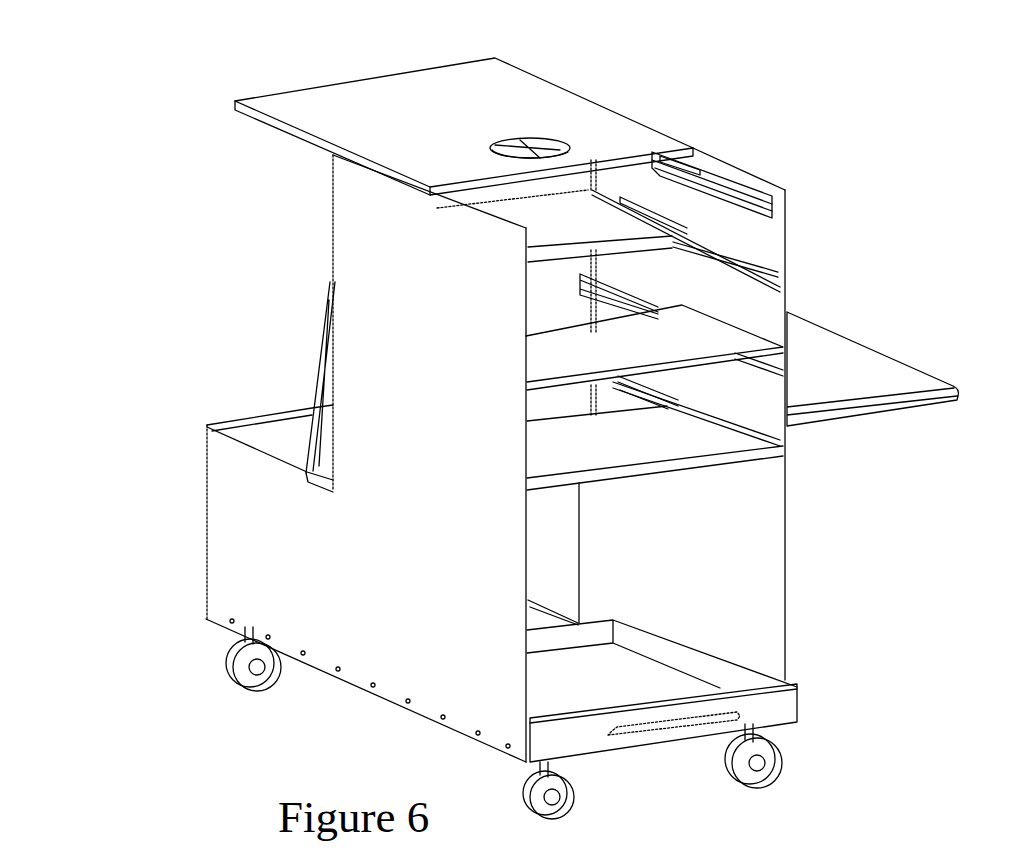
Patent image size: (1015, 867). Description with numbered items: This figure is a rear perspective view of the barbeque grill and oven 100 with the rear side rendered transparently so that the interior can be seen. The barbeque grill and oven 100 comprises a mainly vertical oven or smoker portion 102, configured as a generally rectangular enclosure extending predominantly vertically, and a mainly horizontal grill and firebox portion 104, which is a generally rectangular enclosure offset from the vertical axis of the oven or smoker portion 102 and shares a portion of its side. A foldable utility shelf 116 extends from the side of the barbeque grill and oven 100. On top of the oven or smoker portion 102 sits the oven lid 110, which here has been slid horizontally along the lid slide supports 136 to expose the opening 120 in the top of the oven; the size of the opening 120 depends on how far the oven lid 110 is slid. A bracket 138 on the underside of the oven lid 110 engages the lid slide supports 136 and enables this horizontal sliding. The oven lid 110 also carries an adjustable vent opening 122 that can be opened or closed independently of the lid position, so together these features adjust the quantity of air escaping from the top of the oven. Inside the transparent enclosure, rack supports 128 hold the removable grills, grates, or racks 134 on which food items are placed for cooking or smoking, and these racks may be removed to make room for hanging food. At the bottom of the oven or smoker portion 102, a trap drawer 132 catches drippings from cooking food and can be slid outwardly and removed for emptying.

The barbeque grill and oven 100 is at (195, 262).
The oven or smoker portion 102 is at (668, 555).
The grill and firebox portion 104 is at (255, 538).
The oven lid 110 is at (507, 96).
The foldable utility shelf 116 is at (892, 368).
The opening 120 is at (497, 190).
The adjustable vent opening 122 is at (565, 138).
The rack supports 128 is at (690, 262).
The trap drawer 132 is at (763, 700).
The removable grills, grates, or racks 134 is at (620, 228).
The lid slide supports 136 is at (692, 181).
The bracket 138 is at (660, 155).